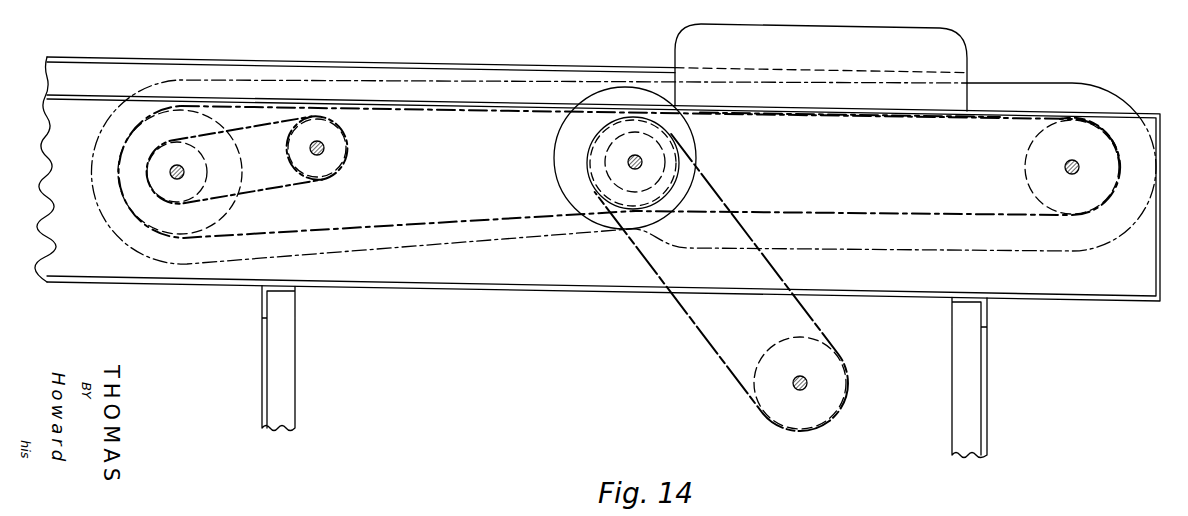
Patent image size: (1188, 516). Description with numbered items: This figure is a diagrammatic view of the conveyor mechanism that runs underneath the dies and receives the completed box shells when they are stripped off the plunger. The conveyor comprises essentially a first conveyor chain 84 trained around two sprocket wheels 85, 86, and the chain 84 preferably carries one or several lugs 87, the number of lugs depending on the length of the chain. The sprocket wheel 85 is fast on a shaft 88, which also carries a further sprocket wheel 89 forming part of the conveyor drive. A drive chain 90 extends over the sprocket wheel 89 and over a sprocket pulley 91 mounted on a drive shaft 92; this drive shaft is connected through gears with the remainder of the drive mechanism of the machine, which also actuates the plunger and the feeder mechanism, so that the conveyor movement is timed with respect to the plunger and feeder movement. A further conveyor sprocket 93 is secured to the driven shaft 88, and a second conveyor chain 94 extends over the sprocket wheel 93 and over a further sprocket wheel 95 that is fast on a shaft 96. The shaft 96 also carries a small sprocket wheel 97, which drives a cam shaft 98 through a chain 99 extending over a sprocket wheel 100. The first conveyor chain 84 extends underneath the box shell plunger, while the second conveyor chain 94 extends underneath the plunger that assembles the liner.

The first conveyor chain 84 is at (822, 116).
The sprocket wheel 85 is at (676, 185).
The sprocket wheel 86 is at (1024, 172).
The lug 87 is at (1103, 122).
The shaft 88 is at (641, 156).
The sprocket wheel 89 is at (682, 165).
The drive chain 90 is at (694, 327).
The sprocket pulley 91 is at (774, 343).
The drive shaft 92 is at (796, 388).
The conveyor sprocket 93 is at (607, 166).
The second conveyor chain 94 is at (427, 110).
The sprocket wheel 95 is at (232, 200).
The shaft 96 is at (176, 175).
The small sprocket wheel 97 is at (198, 162).
The cam shaft 98 is at (310, 150).
The chain 99 is at (303, 176).
The sprocket wheel 100 is at (303, 176).